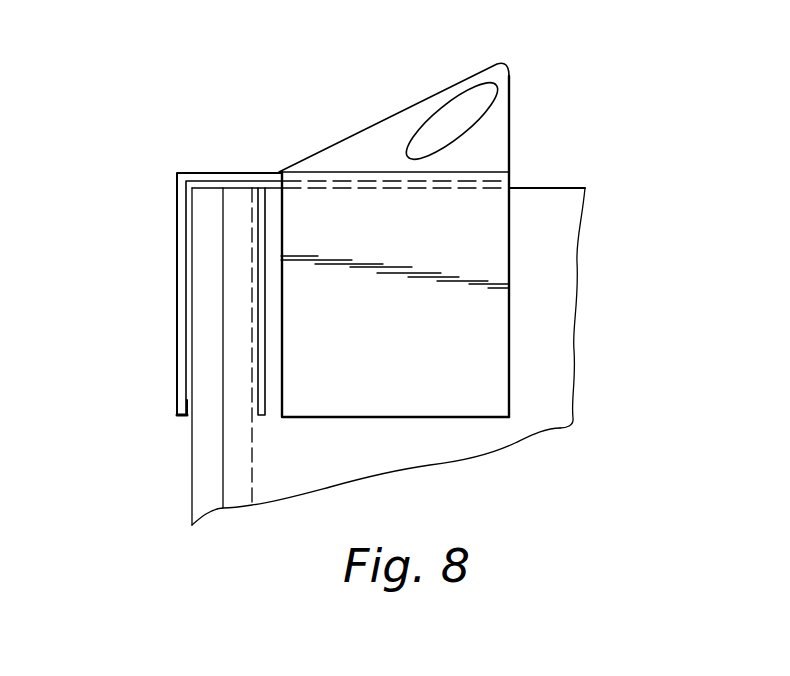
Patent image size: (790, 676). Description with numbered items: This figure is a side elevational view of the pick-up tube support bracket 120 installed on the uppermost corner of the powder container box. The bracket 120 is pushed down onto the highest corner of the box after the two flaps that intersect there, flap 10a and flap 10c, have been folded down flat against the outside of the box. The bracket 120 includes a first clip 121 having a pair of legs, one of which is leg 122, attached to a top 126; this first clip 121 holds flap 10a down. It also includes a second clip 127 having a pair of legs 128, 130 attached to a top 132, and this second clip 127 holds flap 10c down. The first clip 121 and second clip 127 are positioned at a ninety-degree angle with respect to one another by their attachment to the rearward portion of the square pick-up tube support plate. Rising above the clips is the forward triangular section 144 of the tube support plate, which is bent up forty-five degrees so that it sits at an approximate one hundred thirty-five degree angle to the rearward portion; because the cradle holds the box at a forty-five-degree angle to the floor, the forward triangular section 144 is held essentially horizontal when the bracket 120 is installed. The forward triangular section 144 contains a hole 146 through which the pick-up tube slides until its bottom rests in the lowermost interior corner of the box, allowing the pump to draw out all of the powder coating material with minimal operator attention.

The flap 10a is at (410, 461).
The flap 10c is at (193, 490).
The pick-up tube support bracket 120 is at (311, 155).
The first clip 121 is at (510, 392).
The leg 122 is at (392, 418).
The top 126 is at (512, 172).
The second clip 127 is at (177, 320).
The leg 128 is at (177, 393).
The leg 130 is at (262, 415).
The top 132 is at (204, 173).
The forward triangular section 144 is at (383, 118).
The hole 146 is at (465, 90).